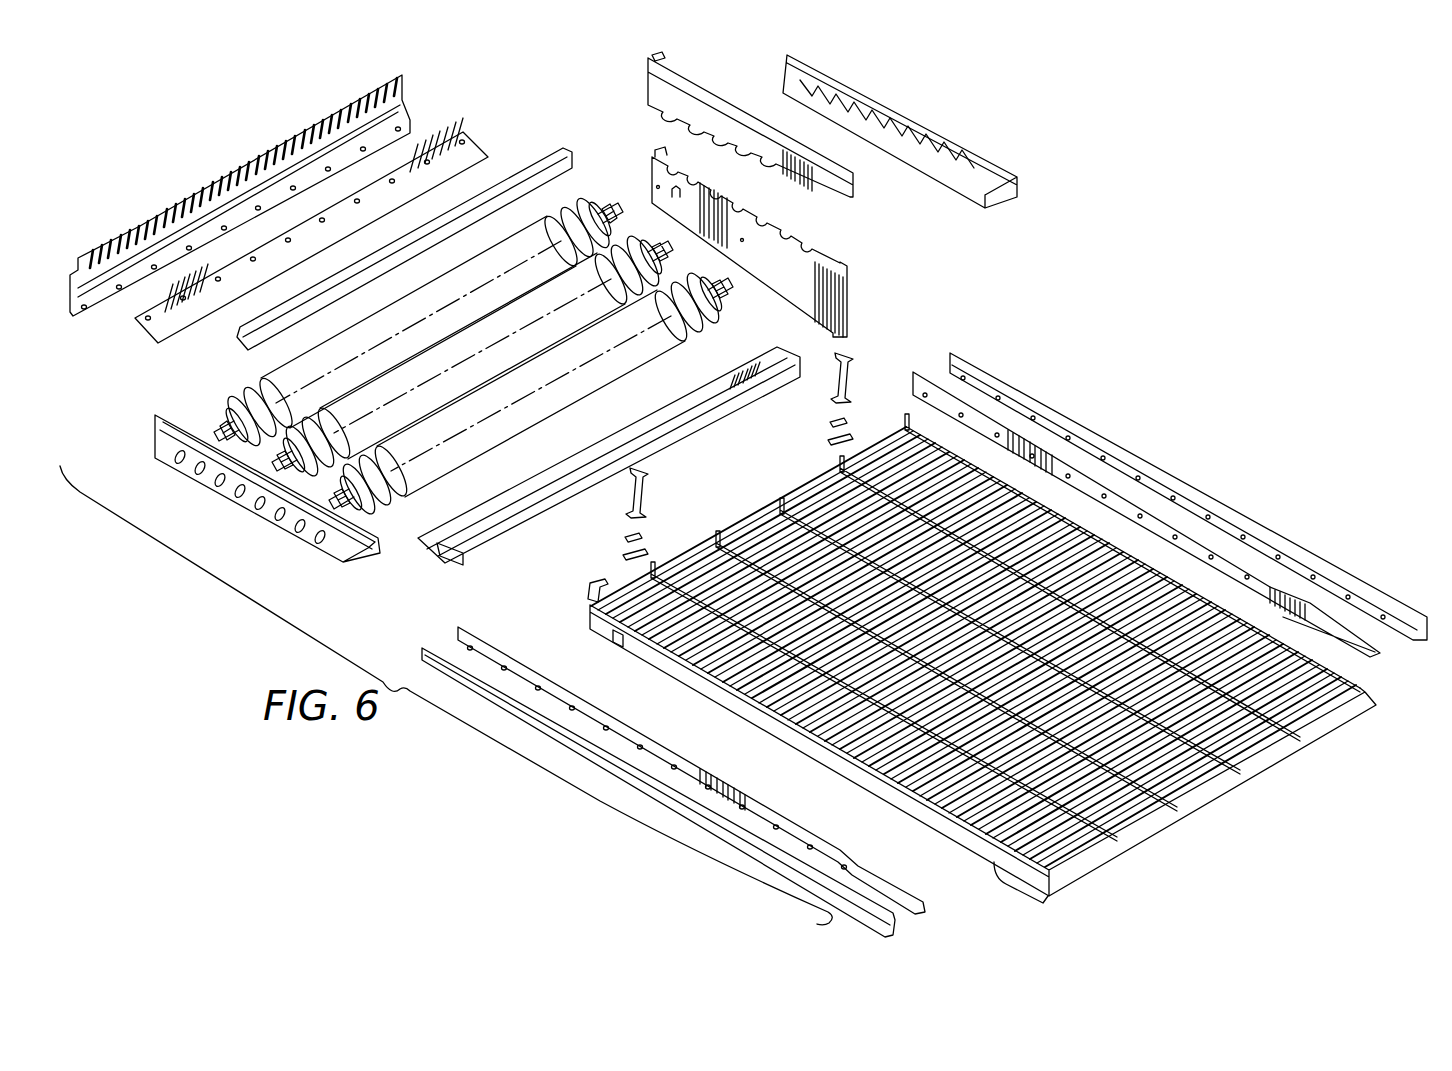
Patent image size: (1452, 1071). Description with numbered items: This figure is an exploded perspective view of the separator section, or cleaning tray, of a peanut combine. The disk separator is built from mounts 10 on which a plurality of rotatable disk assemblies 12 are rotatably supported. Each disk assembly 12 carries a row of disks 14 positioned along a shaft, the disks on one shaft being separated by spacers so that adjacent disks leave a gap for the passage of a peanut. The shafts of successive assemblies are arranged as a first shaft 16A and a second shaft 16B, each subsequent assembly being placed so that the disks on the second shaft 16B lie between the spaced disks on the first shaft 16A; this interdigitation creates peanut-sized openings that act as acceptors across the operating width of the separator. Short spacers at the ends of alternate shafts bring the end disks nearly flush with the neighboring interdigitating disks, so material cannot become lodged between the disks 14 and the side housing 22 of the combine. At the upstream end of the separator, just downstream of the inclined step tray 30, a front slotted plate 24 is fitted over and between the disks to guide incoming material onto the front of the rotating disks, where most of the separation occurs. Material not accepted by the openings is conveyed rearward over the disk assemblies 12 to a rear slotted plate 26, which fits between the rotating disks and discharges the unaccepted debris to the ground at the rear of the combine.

The mount 10 is at (946, 140).
The disk assembly 12 is at (418, 348).
The disk 14 is at (560, 218).
The first shaft 16A is at (720, 287).
The second shaft 16B is at (665, 240).
The side housing 22 is at (845, 273).
The front slotted plate 24 is at (543, 495).
The rear slotted plate 26 is at (280, 140).
The inclined step tray 30 is at (1200, 787).